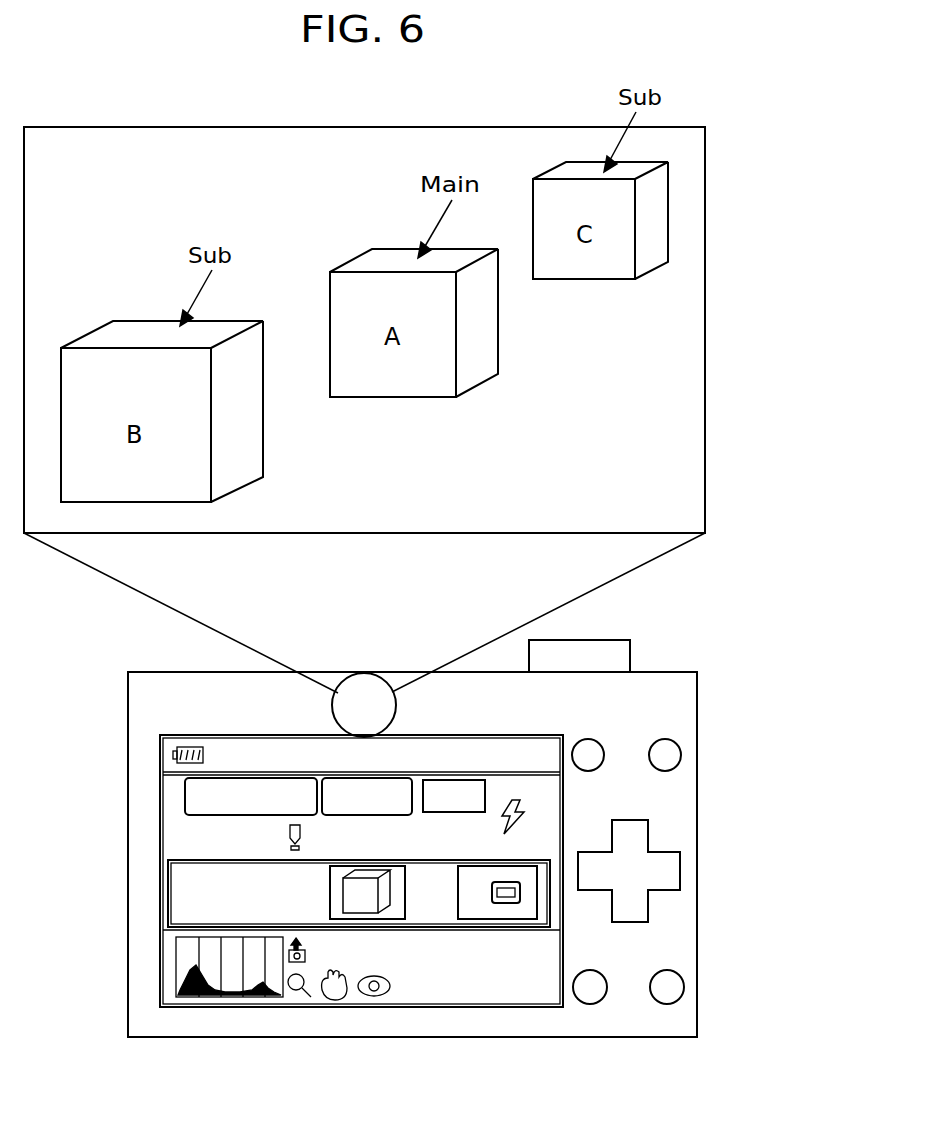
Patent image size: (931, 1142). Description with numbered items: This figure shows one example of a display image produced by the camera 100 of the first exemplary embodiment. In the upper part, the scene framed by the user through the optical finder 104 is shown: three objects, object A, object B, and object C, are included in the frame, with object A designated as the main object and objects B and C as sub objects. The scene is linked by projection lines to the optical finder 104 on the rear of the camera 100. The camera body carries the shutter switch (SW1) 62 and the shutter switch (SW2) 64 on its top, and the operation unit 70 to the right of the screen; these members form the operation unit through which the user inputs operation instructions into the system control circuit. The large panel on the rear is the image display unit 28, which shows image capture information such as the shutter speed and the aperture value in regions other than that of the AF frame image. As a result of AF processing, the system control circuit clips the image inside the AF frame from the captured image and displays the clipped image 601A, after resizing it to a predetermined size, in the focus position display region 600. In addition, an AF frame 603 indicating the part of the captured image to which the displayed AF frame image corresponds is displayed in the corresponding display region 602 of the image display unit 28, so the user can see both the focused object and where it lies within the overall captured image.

The camera 100 is at (737, 718).
The optical finder 104 is at (333, 708).
The shutter switch (SW1) 62 is at (632, 655).
The shutter switch (SW2) 64 is at (632, 652).
The image display unit 28 is at (160, 878).
The operation unit 70 is at (688, 878).
The focus position display region 600 is at (168, 912).
The clipped image 601A is at (350, 919).
The corresponding display region 602 is at (476, 920).
The AF frame 603 is at (515, 900).